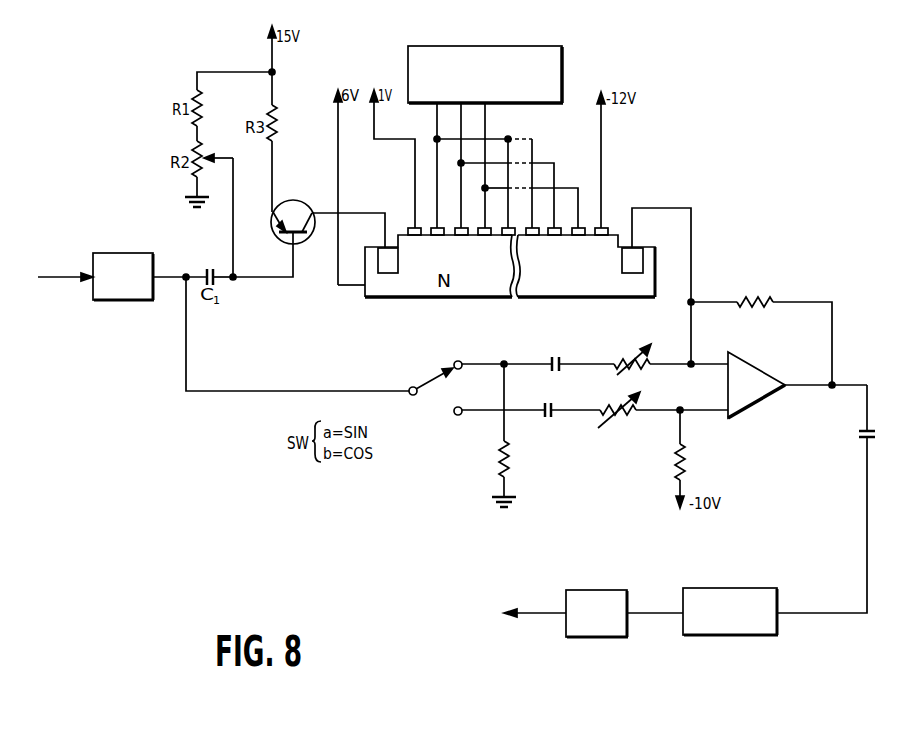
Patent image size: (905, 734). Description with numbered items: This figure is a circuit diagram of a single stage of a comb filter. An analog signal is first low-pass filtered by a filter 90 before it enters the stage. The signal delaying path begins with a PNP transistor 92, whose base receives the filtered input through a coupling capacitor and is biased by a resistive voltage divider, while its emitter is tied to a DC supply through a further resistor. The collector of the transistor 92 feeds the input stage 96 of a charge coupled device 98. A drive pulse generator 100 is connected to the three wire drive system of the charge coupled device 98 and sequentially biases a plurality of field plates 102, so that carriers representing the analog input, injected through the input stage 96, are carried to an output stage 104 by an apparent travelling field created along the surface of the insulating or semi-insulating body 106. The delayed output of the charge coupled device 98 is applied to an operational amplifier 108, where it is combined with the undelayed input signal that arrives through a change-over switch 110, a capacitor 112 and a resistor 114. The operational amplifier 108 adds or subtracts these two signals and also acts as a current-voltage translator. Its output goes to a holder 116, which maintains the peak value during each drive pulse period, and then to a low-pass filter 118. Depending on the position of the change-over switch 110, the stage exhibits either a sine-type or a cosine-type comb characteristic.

The filter 90 is at (155, 253).
The PNP transistor 92 is at (271, 243).
The input stage 96 is at (384, 246).
The charge coupled device 98 is at (554, 147).
The drive pulse generator 100 is at (564, 60).
The field plates 102 is at (560, 227).
The output stage 104 is at (637, 247).
The insulating or semi-insulating body 106 is at (572, 266).
The operational amplifier 108 is at (753, 406).
The change-over switch 110 is at (428, 413).
The capacitor 112 is at (548, 370).
The resistor 114 is at (645, 370).
The holder 116 is at (748, 637).
The low-pass filter 118 is at (607, 638).